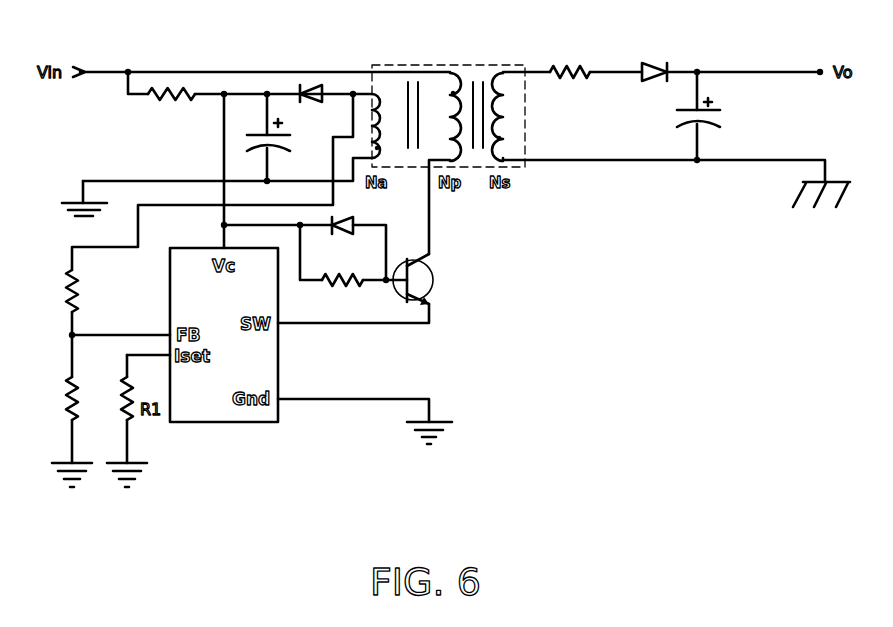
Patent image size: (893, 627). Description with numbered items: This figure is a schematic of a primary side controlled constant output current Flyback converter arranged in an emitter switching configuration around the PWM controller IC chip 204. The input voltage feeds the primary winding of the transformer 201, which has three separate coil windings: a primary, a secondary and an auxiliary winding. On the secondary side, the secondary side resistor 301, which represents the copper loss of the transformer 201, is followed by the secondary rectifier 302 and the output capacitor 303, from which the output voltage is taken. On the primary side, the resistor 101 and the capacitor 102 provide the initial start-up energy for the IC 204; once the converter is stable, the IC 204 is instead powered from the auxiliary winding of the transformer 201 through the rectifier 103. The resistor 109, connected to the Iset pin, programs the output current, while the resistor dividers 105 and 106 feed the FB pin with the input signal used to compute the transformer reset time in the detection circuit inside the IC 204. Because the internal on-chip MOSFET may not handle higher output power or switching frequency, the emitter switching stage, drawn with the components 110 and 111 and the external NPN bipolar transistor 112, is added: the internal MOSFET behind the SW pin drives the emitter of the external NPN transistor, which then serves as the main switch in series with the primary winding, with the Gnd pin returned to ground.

The resistor 101 is at (173, 101).
The capacitor 102 is at (283, 150).
The rectifier 103 is at (308, 100).
The resistor divider 105 is at (68, 299).
The resistor divider 106 is at (68, 408).
The resistor 109 is at (122, 408).
The diode 110 is at (338, 236).
The resistor 111 is at (342, 288).
The transistor 112 is at (434, 293).
The transformer 201 is at (440, 63).
The PWM controller IC chip 204 is at (227, 296).
The secondary side resistor 301 is at (572, 65).
The secondary rectifier 302 is at (657, 64).
The output capacitor 303 is at (683, 127).